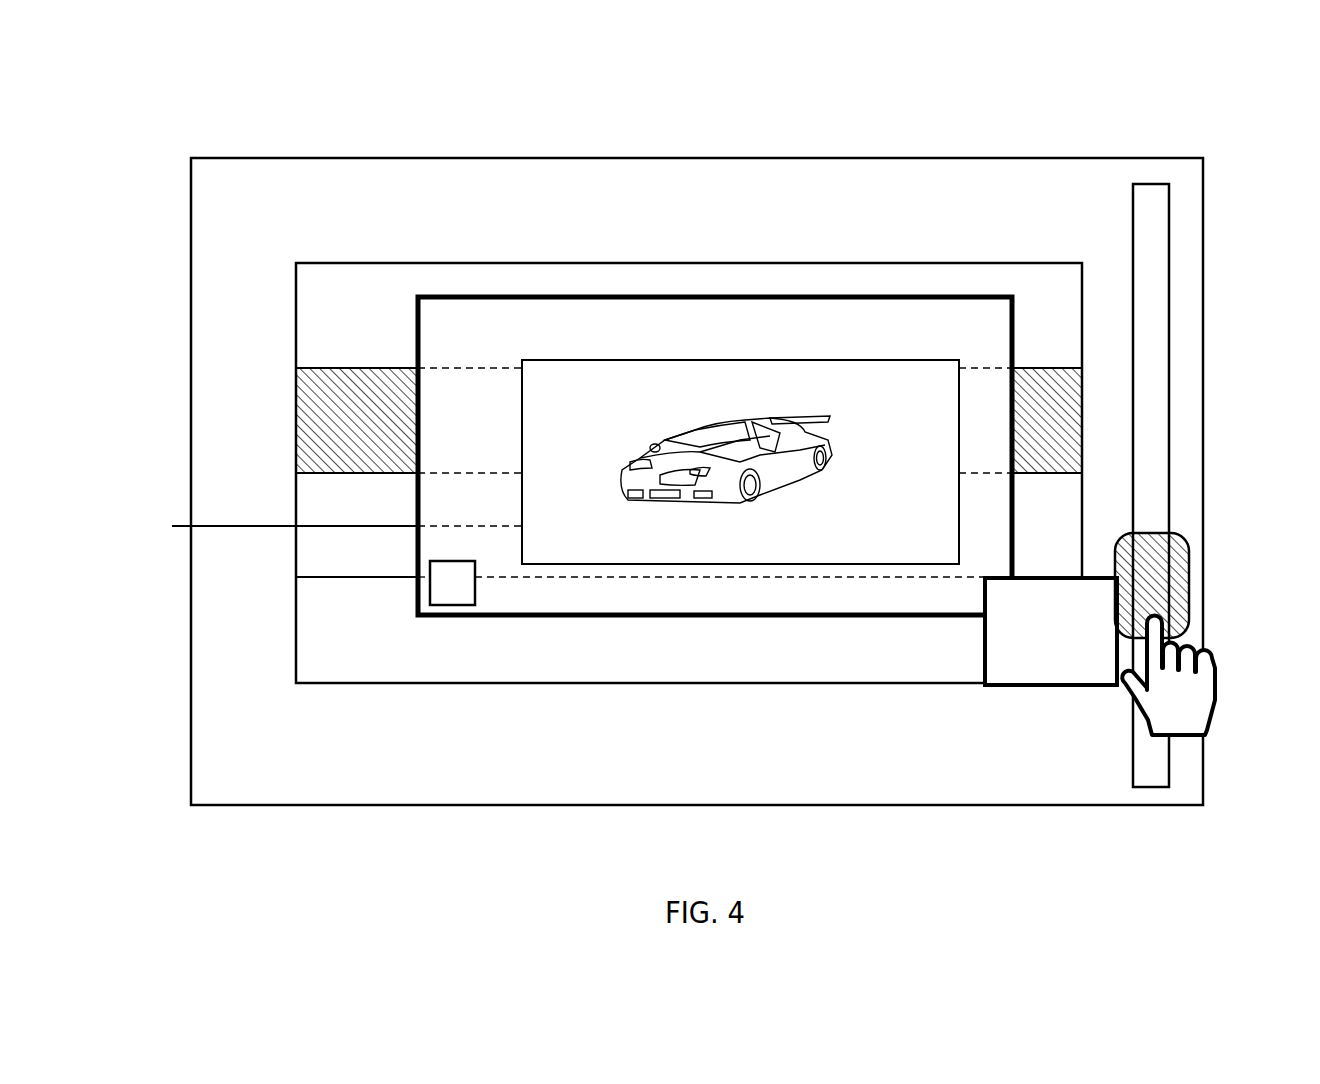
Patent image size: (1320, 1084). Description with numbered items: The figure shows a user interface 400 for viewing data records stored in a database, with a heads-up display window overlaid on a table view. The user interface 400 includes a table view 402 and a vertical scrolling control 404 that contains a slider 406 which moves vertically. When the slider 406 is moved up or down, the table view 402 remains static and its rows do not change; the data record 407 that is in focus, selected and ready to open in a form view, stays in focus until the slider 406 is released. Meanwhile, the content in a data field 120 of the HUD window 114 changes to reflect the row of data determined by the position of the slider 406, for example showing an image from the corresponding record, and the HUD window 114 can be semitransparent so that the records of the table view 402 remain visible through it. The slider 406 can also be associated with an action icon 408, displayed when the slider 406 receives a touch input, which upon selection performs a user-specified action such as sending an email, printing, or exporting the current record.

The user interface 400 is at (278, 158).
The table view 402 is at (590, 386).
The HUD window 114 is at (575, 297).
The scrolling control 404 is at (1170, 348).
The slider 406 is at (1187, 587).
The data record 407 is at (296, 420).
The data field 120 is at (172, 526).
The action icon 408 is at (1047, 690).